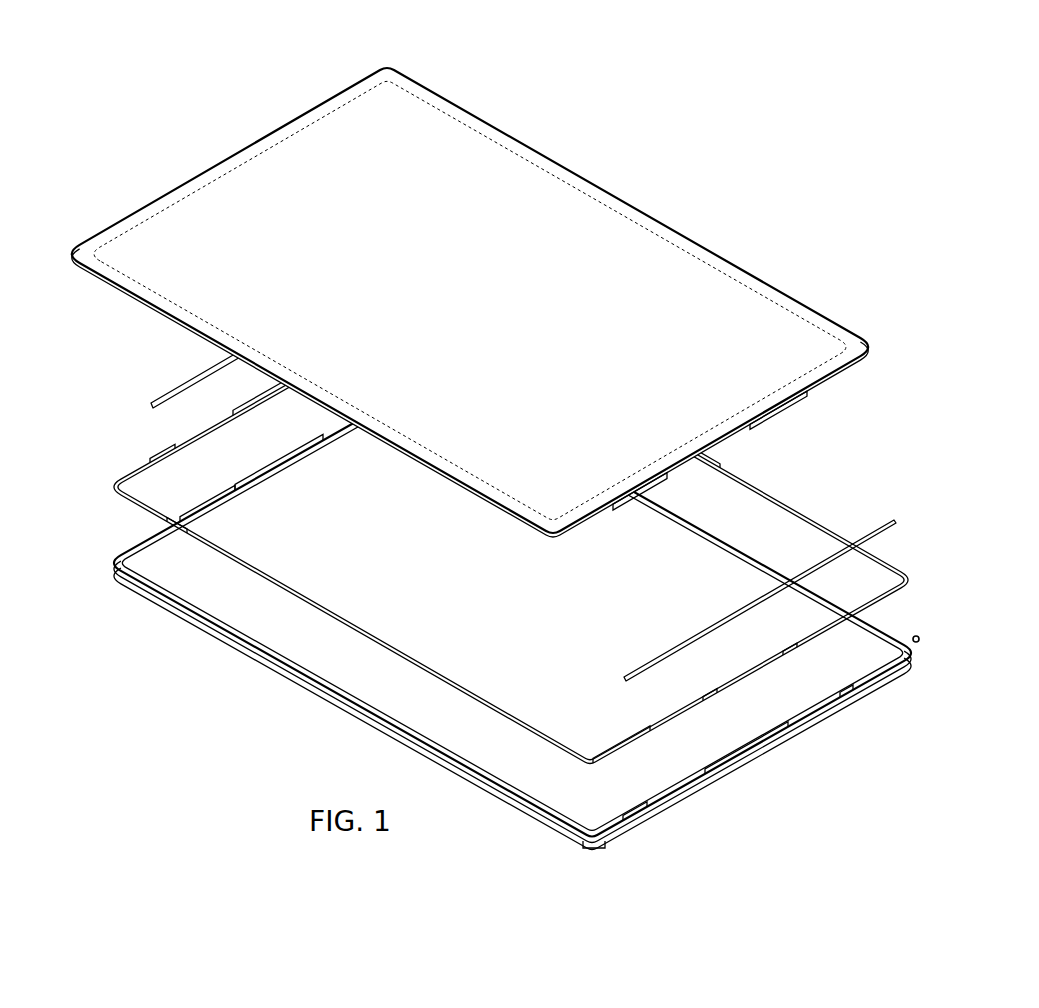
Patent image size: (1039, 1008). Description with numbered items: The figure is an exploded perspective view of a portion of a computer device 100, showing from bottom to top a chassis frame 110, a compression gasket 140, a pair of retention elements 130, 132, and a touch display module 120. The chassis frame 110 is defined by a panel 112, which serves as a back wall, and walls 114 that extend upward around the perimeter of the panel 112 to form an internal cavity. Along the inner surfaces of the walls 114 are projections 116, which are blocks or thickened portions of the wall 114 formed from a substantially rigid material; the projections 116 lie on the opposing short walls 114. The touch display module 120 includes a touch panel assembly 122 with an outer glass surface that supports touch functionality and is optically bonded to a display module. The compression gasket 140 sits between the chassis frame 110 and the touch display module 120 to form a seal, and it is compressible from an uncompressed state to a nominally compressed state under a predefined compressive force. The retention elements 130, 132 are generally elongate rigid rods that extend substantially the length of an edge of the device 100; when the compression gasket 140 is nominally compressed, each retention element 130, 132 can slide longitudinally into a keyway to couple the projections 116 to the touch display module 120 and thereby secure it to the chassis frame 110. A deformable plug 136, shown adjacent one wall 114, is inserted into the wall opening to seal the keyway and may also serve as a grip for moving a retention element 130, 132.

The computer device 100 is at (516, 444).
The chassis frame 110 is at (518, 615).
The panel 112 is at (335, 656).
The walls 114 is at (136, 545).
The projection 116 is at (765, 734).
The touch display module 120 is at (470, 287).
The touch panel assembly 122 is at (777, 408).
The retention element 130 is at (168, 392).
The retention element 132 is at (877, 528).
The plug 136 is at (920, 636).
The compression gasket 140 is at (132, 470).